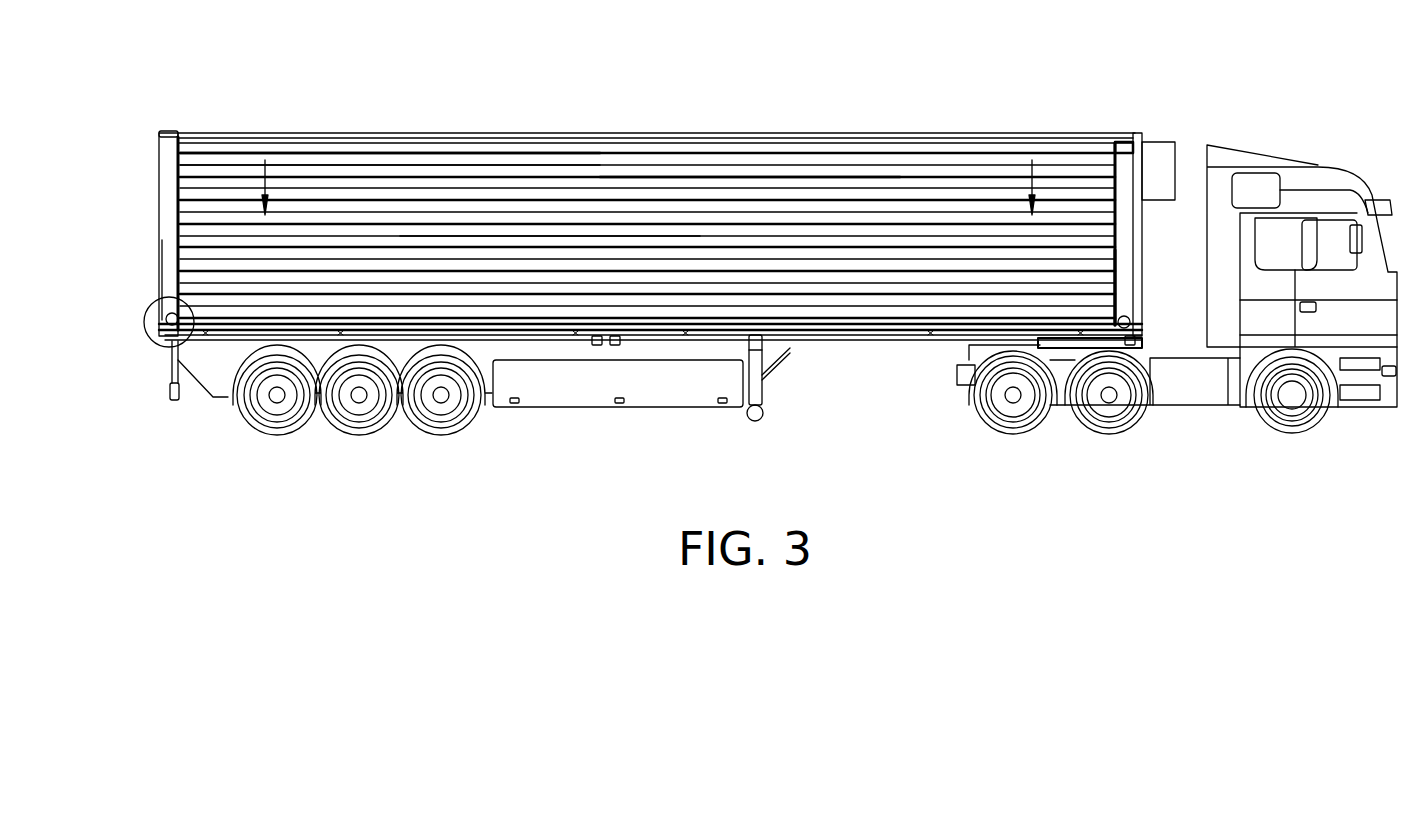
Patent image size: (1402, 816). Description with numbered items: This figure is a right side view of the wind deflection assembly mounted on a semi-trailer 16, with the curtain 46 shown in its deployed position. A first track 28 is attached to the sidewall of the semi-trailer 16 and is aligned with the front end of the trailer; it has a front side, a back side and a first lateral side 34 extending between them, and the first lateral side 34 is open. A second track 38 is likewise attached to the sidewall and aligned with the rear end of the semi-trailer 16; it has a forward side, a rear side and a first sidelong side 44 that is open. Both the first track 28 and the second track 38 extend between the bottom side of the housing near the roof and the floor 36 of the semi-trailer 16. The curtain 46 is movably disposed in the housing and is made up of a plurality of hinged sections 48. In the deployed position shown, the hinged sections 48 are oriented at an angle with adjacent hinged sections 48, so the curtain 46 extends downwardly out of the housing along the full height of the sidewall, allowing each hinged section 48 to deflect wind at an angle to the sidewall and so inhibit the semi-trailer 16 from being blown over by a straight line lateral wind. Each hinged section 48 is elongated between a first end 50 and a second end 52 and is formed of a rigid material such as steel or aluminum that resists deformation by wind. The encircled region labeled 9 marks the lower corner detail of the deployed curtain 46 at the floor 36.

The detail region of lower corner 9 is at (140, 321).
The semi-trailer 16 is at (642, 255).
The first track 28 is at (1120, 173).
The first lateral side 34 is at (1113, 218).
The floor 36 is at (884, 340).
The second track 38 is at (167, 172).
The first sidelong side 44 is at (183, 192).
The curtain 46 is at (732, 173).
The hinged sections 48 is at (520, 237).
The first end 50 is at (1115, 273).
The second end 52 is at (176, 266).